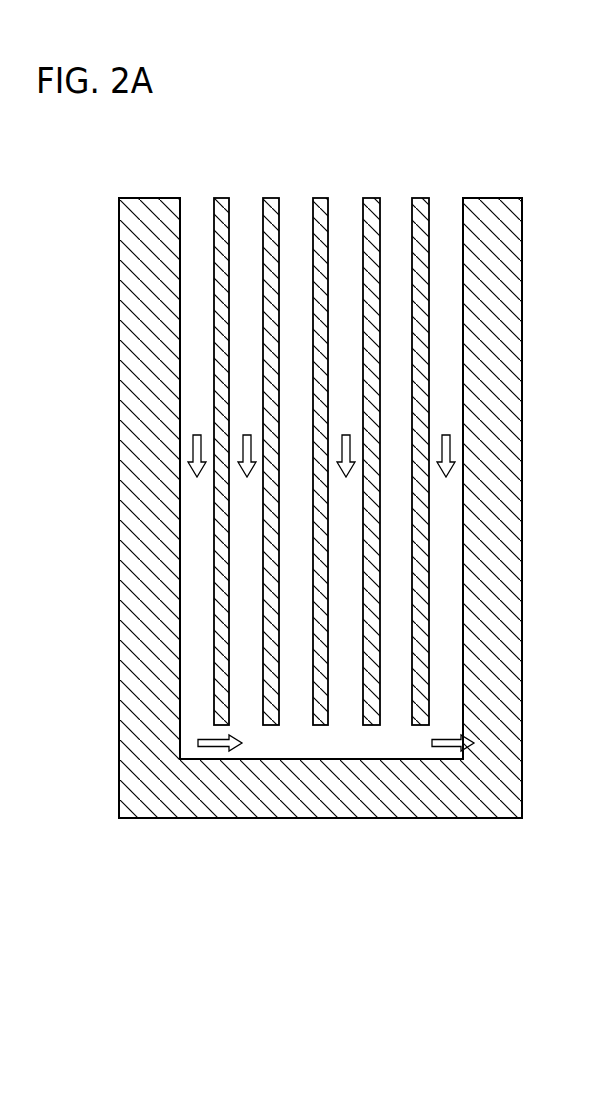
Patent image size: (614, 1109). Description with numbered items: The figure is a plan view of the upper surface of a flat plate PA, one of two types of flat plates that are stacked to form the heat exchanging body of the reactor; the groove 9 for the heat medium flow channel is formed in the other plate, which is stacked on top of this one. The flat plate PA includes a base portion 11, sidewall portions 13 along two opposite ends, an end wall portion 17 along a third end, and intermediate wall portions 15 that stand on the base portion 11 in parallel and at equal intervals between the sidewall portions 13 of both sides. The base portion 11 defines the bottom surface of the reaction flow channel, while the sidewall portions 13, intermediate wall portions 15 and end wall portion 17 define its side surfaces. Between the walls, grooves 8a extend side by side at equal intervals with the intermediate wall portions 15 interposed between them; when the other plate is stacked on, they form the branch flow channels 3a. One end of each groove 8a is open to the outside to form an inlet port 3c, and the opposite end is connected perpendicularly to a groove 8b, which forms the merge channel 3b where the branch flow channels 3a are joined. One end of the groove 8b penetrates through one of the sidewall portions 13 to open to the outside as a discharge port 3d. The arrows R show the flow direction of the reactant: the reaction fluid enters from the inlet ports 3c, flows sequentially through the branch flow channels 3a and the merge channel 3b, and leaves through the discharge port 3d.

The base portion 11 is at (194, 210).
The inlet port 3c is at (446, 198).
The flat plate PA is at (422, 155).
The sidewall portion 13 is at (493, 208).
The groove 9 is at (594, 339).
The groove for branch flow channel 8a is at (331, 461).
The branch flow channel 3a is at (400, 461).
The groove for merge channel 8b is at (519, 640).
The merge channel 3b is at (565, 677).
The discharge port 3d is at (522, 737).
The intermediate wall portion 15 is at (230, 712).
The end wall portion 17 is at (314, 802).
The direction of flow of the reactant R is at (196, 434).